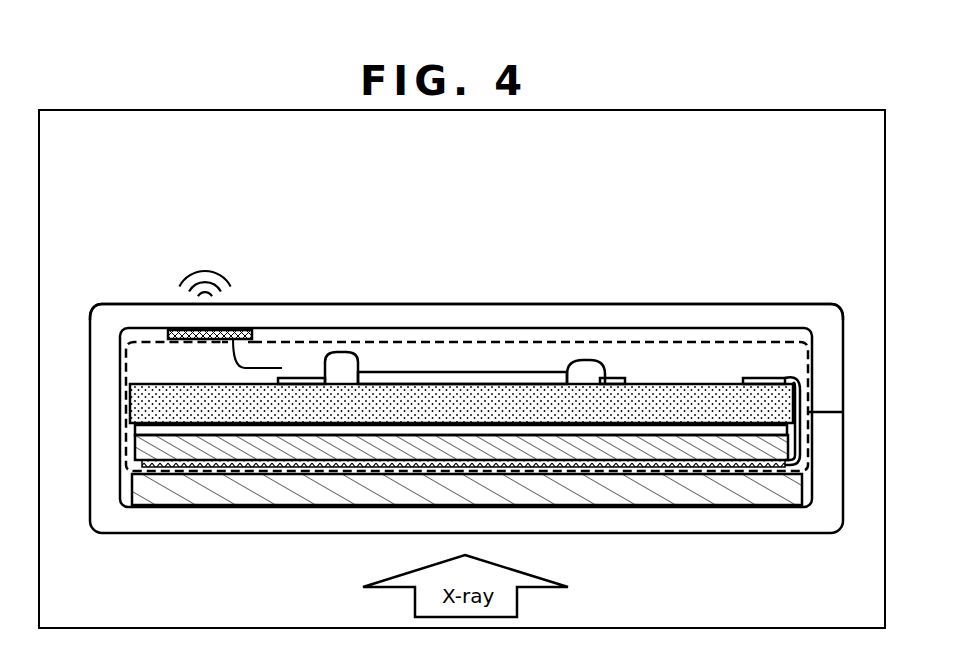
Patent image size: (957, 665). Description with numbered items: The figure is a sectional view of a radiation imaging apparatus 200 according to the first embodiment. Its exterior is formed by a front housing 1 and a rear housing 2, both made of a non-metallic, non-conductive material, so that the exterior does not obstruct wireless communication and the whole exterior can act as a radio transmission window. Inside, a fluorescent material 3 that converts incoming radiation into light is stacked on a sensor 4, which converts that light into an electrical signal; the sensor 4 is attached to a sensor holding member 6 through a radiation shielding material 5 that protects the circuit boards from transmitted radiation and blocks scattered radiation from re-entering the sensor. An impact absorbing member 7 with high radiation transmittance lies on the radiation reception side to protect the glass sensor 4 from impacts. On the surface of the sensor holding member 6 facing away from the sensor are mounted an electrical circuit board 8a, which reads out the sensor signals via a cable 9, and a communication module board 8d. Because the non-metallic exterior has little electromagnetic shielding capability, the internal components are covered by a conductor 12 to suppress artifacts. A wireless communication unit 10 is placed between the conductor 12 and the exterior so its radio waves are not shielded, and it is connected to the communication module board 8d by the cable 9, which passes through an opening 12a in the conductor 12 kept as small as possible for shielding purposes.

The front housing 1 is at (88, 507).
The rear housing 2 is at (792, 304).
The fluorescent material 3 is at (802, 470).
The sensor 4 is at (137, 452).
The radiation shielding material 5 is at (133, 428).
The sensor holding member 6 is at (140, 400).
The impact absorbing member 7 is at (793, 486).
The electrical circuit board 8a is at (772, 378).
The communication module board 8d is at (302, 378).
The cable 9 is at (280, 377).
The wireless communication unit 10 is at (180, 330).
The conductor 12 is at (445, 342).
The opening 12a is at (253, 343).
The imaging apparatus 200 is at (541, 182).